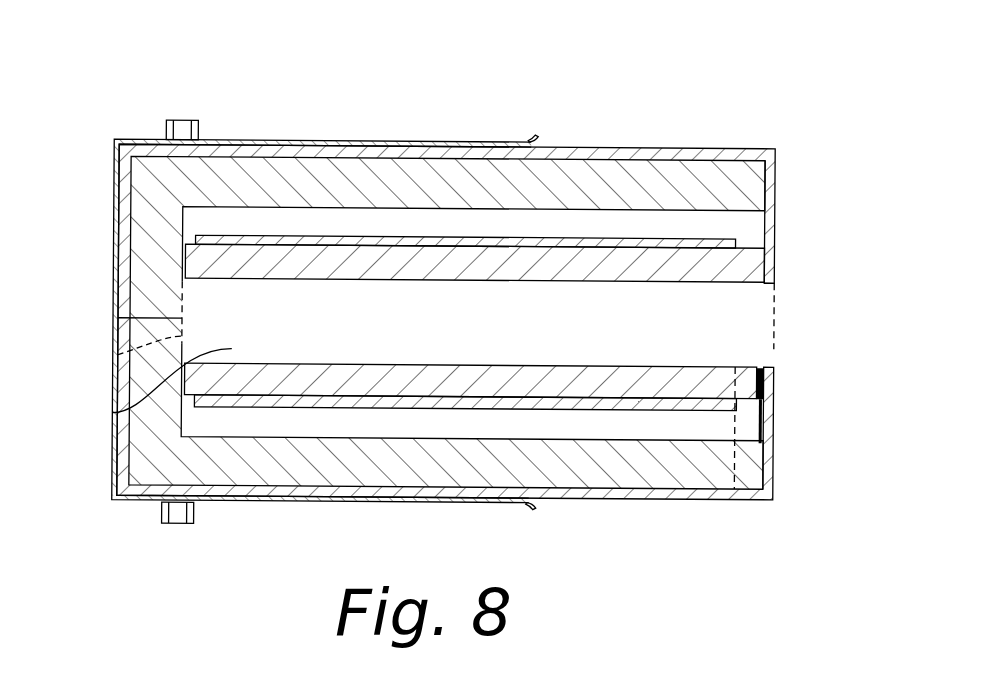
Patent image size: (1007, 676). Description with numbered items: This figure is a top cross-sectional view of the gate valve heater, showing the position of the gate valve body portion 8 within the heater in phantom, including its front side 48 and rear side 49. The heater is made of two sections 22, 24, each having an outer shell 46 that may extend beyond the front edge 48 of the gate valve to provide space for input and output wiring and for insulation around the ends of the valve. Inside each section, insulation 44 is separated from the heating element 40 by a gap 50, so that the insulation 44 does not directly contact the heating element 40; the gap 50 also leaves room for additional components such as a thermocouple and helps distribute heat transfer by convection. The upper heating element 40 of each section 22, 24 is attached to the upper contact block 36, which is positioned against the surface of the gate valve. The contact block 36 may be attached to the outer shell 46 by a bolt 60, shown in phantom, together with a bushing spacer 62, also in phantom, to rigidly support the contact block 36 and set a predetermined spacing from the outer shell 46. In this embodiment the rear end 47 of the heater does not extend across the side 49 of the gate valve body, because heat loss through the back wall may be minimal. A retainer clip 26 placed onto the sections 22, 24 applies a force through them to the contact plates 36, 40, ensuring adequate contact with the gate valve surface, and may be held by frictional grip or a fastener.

The gate valve body portion 8 is at (113, 415).
The section 22 is at (733, 500).
The section 24 is at (776, 172).
The retainer clip 26 is at (361, 142).
The upper contact block 36 is at (748, 257).
The upper heating element 40 is at (736, 238).
The insulation 44 is at (741, 173).
The outer shell 46 is at (586, 147).
The rear end 47 is at (775, 282).
The front side 48 is at (118, 357).
The rear side 49 is at (780, 318).
The gap 50 is at (657, 223).
The bolt 60 is at (782, 490).
The bushing spacer 62 is at (750, 448).